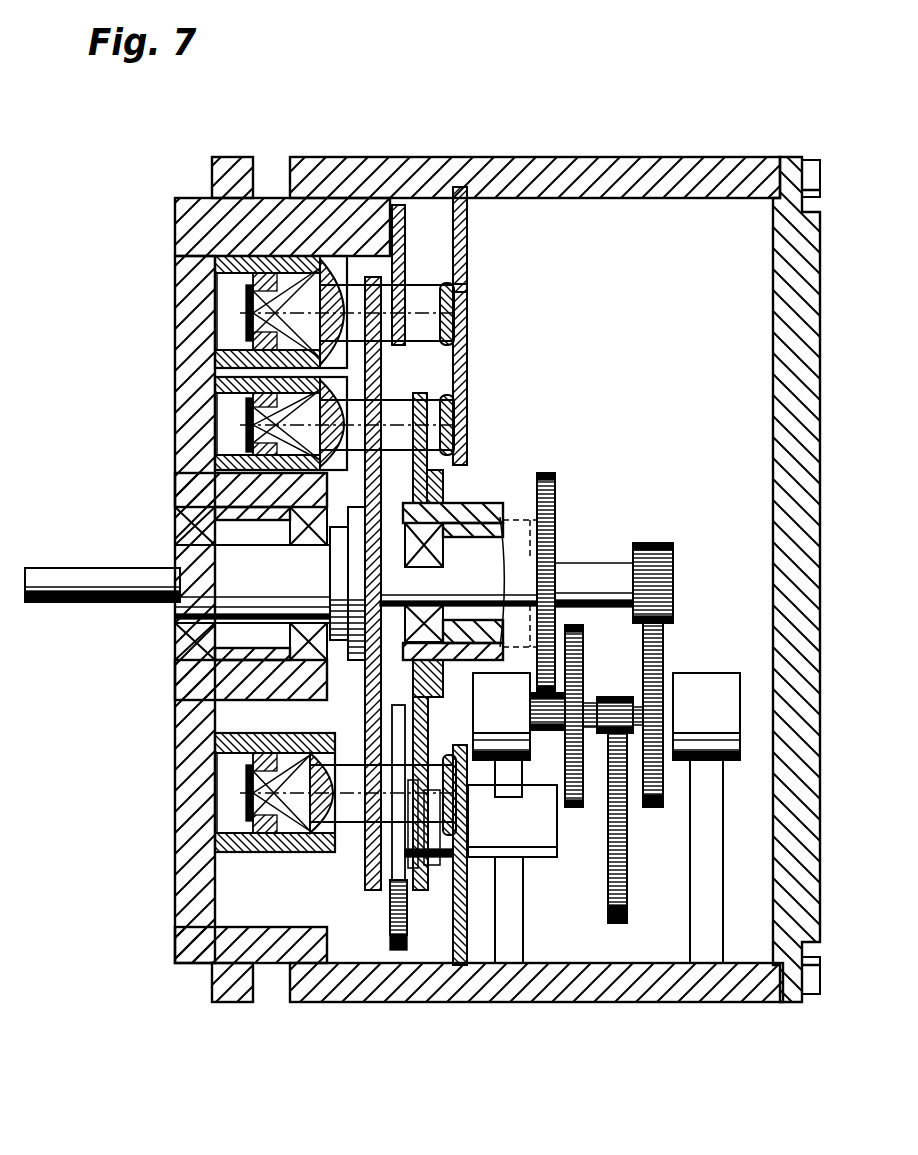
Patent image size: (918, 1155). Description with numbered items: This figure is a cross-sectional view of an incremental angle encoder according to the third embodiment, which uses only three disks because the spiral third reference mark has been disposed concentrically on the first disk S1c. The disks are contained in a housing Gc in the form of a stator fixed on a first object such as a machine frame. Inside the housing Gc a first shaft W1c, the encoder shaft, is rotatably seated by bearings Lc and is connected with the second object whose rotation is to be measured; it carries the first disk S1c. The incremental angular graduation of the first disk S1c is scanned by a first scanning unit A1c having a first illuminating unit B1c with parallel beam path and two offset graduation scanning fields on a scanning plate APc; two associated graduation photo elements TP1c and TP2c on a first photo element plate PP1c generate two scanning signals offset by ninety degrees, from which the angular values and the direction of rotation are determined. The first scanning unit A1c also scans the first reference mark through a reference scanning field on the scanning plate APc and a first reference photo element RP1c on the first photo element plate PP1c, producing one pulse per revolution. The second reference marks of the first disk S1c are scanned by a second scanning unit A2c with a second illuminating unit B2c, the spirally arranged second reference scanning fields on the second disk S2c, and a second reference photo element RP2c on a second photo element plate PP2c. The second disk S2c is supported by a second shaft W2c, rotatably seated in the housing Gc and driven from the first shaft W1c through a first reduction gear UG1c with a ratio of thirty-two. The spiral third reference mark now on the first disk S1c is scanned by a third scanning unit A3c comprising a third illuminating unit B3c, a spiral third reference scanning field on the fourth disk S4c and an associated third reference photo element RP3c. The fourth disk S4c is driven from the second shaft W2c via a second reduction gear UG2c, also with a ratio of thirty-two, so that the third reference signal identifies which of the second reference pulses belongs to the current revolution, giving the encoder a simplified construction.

The housing Gc is at (655, 980).
The first shaft W1c is at (90, 585).
The bearings Lc is at (293, 528).
The first disk S1c is at (375, 880).
The scanning plate APc is at (400, 205).
The first photo element plate PP1c is at (460, 187).
The graduation photo element TP1c is at (515, 267).
The graduation photo element TP2c is at (455, 284).
The first reference photo element RP1c is at (462, 355).
The third reference photo element RP3c is at (462, 440).
The fourth disk S4c is at (421, 393).
The first scanning unit A1c is at (256, 243).
The first illuminating unit B1c is at (291, 290).
The third scanning unit A3c is at (256, 442).
The third illuminating unit B3c is at (228, 458).
The second scanning unit A2c is at (287, 833).
The second illuminating unit B2c is at (288, 822).
The second disk S2c is at (400, 963).
The second reference photo element RP2c is at (448, 770).
The second photo element plate PP2c is at (460, 1003).
The second reduction gear UG2c is at (585, 683).
The second shaft W2c is at (605, 847).
The first reduction gear UG1c is at (657, 830).